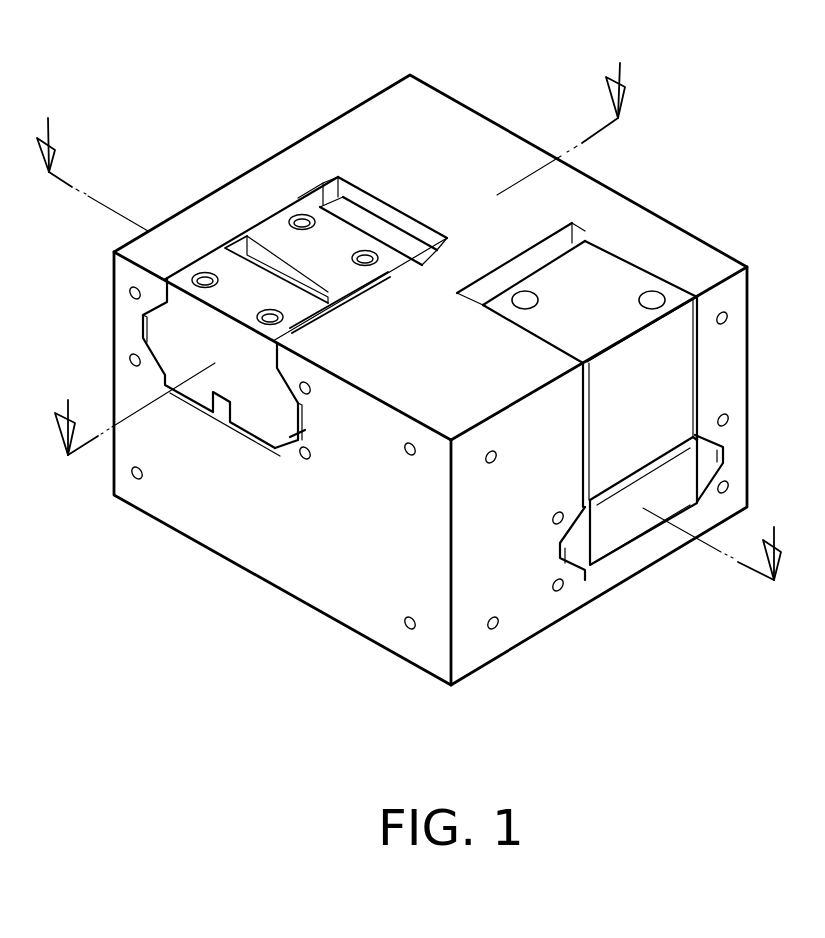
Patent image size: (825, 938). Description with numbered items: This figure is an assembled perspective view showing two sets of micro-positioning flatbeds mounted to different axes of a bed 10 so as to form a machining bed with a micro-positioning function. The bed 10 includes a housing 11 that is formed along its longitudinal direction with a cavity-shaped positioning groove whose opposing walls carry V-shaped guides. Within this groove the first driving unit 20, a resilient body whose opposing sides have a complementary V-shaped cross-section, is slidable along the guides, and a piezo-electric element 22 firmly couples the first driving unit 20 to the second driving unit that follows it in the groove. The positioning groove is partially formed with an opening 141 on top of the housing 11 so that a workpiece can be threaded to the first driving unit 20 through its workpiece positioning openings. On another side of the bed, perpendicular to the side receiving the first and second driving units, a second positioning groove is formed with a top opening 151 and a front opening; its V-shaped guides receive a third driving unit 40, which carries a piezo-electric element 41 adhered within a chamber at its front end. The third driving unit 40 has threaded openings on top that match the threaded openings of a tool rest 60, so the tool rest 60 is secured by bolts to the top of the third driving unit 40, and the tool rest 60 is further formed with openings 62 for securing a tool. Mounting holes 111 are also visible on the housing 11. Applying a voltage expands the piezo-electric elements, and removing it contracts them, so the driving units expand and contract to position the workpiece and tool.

The bed 10 is at (519, 124).
The housing 11 is at (449, 112).
The mounting hole 111 is at (733, 320).
The opening 141 is at (320, 193).
The piezo-electric element 22 is at (373, 227).
The first driving unit 20 is at (153, 335).
The top opening 151 is at (578, 233).
The tool rest 60 is at (625, 277).
The openings 62 is at (652, 297).
The third driving unit 40 is at (703, 472).
The piezo-electric element 41 is at (627, 532).